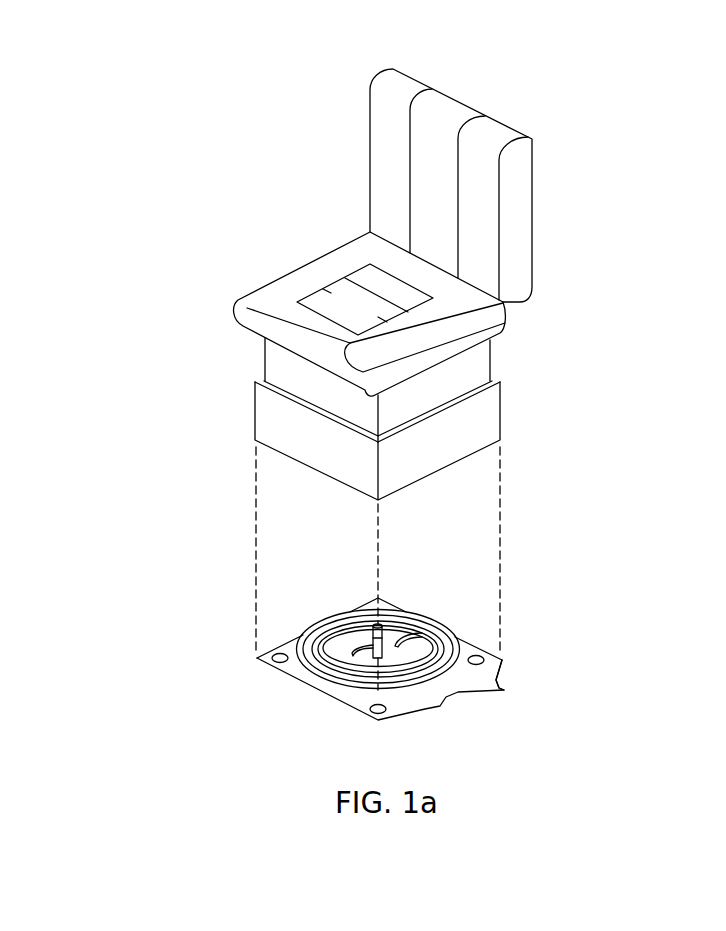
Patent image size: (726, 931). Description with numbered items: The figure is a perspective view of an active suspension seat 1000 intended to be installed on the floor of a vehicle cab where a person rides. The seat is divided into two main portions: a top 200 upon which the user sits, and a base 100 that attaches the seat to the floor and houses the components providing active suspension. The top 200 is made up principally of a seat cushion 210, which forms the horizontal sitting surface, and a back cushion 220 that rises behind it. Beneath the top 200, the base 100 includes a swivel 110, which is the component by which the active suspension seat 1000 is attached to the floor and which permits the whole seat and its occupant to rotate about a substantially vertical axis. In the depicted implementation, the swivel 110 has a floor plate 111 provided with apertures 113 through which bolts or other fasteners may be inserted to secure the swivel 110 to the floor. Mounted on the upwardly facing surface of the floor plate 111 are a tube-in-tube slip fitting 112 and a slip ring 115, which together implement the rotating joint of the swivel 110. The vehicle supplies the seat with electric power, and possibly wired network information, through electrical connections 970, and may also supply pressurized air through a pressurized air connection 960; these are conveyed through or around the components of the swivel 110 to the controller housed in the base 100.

The active suspension seat 1000 is at (297, 61).
The top 200 is at (572, 70).
The seat cushion 210 is at (372, 312).
The back cushion 220 is at (452, 199).
The base 100 is at (572, 358).
The swivel 110 is at (264, 690).
The floor plate 111 is at (280, 645).
The tube-in-tube slip fitting 112 is at (368, 638).
The apertures 113 is at (502, 689).
The slip ring 115 is at (445, 623).
The pressurized air connection 960 is at (352, 652).
The electrical connections 970 is at (403, 636).